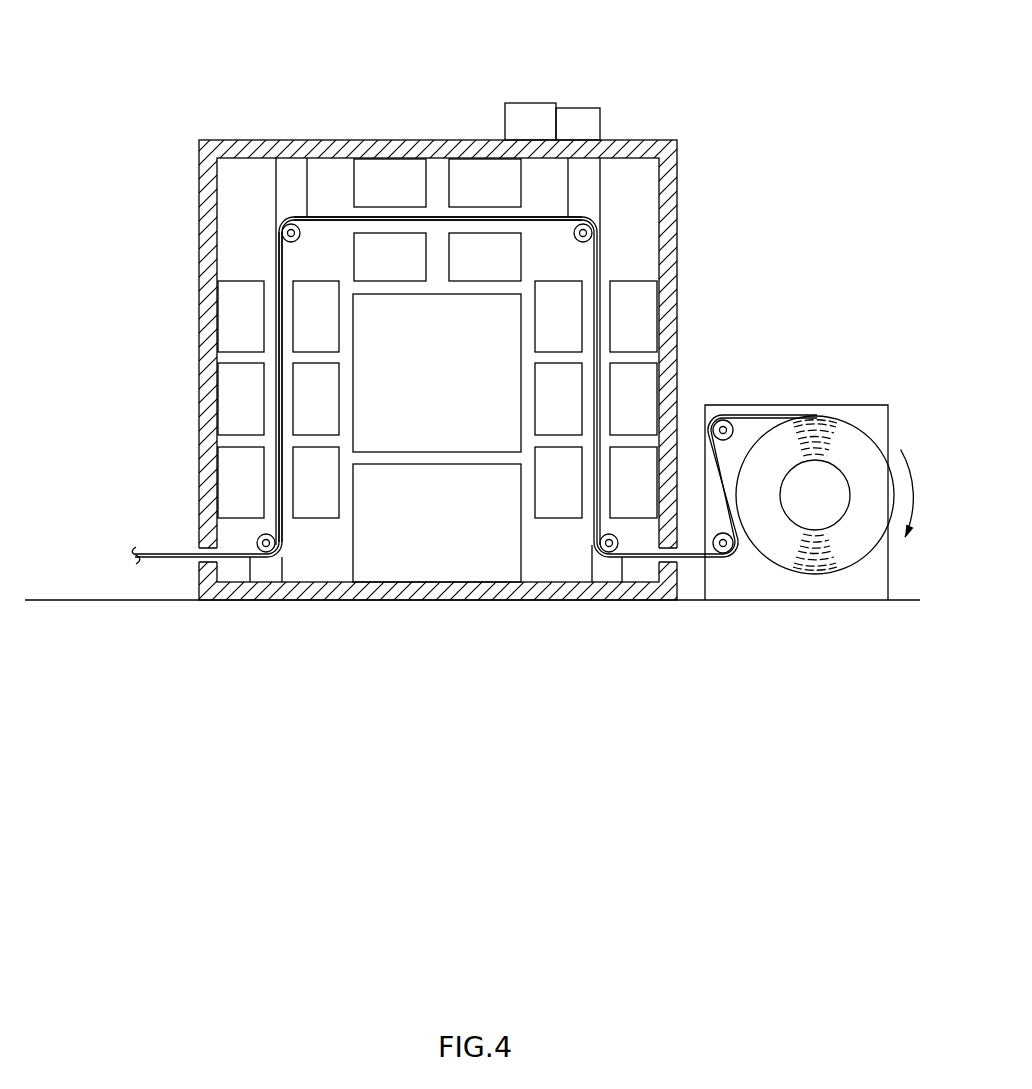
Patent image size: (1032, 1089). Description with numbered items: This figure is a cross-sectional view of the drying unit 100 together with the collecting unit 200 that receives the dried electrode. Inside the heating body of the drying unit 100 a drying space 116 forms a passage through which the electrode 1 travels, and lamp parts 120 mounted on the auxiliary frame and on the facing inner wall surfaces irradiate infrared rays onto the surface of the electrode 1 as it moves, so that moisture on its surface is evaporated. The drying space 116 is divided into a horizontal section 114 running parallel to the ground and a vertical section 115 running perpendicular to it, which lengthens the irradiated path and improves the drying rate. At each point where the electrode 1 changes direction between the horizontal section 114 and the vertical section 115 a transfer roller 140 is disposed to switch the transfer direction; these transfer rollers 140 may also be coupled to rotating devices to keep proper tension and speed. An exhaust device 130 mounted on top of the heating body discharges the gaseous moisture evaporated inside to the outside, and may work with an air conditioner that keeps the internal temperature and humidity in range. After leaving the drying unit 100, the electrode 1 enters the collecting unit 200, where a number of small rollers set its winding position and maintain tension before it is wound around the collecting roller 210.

The processing apparatus 100 is at (668, 91).
The exhaust device 130 is at (531, 110).
The lamp parts 120 is at (632, 320).
The transfer roller 140 is at (590, 231).
The electrode 1 is at (597, 260).
The drying space 116 is at (309, 365).
The horizontal section 114 is at (333, 199).
The vertical section 115 is at (268, 310).
The collecting unit 200 is at (808, 383).
The collecting roller 210 is at (815, 500).